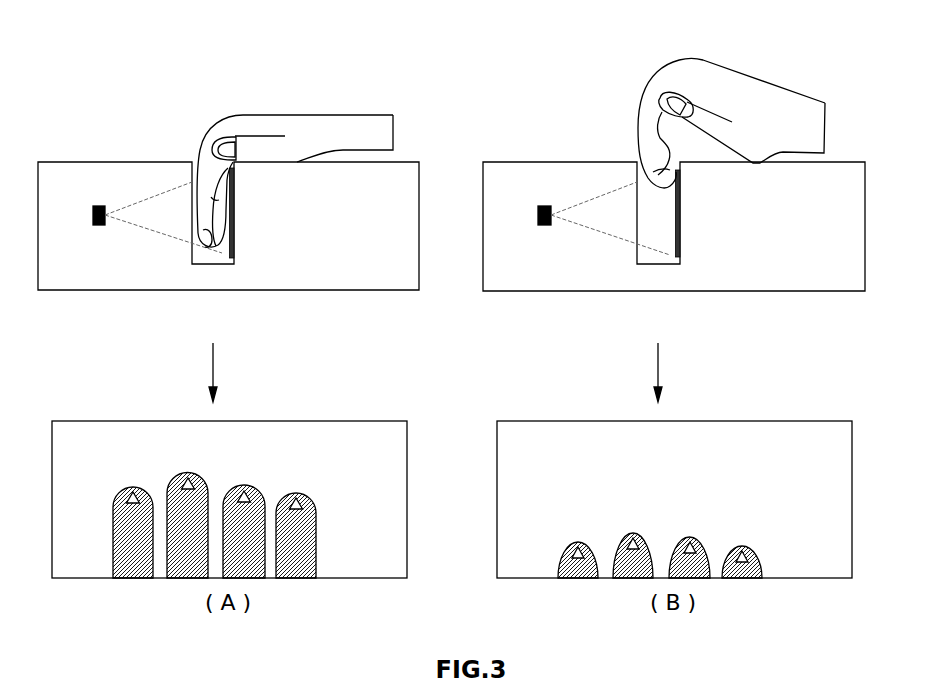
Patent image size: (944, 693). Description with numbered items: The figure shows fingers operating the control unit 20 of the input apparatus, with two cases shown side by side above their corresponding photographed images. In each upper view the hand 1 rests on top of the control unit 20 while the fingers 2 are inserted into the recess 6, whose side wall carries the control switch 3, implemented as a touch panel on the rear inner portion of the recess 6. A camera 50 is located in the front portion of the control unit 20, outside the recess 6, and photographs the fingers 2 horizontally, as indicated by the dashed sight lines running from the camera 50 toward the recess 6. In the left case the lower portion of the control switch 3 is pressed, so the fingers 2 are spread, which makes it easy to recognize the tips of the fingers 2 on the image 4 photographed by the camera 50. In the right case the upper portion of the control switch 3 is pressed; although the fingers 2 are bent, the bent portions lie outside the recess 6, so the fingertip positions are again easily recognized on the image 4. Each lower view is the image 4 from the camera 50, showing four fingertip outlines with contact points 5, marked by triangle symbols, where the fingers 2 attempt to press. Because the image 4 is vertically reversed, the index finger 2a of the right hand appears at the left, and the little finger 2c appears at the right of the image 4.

The hand 1 is at (290, 114).
The fingers 2 is at (223, 253).
The index finger 2a is at (123, 533).
The little finger 2c is at (760, 567).
The control switch 3 is at (237, 231).
The image 4 is at (775, 421).
The contact points 5 is at (318, 513).
The recess 6 is at (192, 166).
The control unit 20 is at (419, 238).
The camera 50 is at (99, 206).